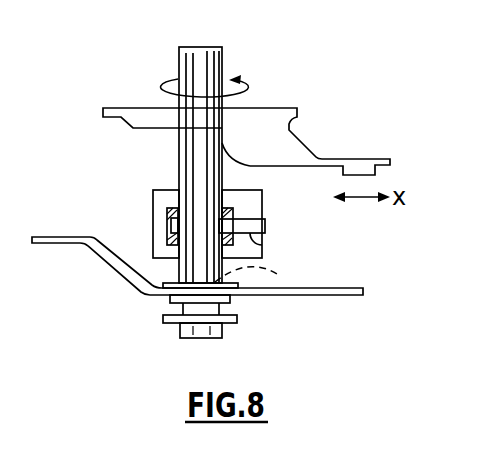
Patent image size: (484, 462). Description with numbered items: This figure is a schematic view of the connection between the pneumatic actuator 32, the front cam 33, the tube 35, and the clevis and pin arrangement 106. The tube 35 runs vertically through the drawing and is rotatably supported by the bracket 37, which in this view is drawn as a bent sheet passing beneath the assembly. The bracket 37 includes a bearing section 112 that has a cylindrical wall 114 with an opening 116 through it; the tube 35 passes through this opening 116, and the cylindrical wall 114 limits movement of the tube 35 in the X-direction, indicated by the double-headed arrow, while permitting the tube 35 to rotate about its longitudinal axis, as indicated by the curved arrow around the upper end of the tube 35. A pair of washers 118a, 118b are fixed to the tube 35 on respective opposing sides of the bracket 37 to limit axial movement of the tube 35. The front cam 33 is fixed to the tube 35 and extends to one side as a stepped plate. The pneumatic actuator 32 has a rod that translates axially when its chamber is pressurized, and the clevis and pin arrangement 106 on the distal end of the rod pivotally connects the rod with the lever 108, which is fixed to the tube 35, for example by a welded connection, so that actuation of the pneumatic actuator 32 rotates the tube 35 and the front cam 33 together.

The pneumatic actuator 32 is at (262, 201).
The front cam 33 is at (298, 106).
The tube 35 is at (178, 181).
The bracket 37 is at (335, 297).
The clevis and pin arrangement 106 is at (165, 226).
The lever 108 is at (265, 238).
The bearing section 112 is at (160, 307).
The cylindrical wall 114 is at (230, 302).
The opening 116 is at (266, 277).
The washer 118a is at (238, 287).
The washer 118b is at (177, 326).